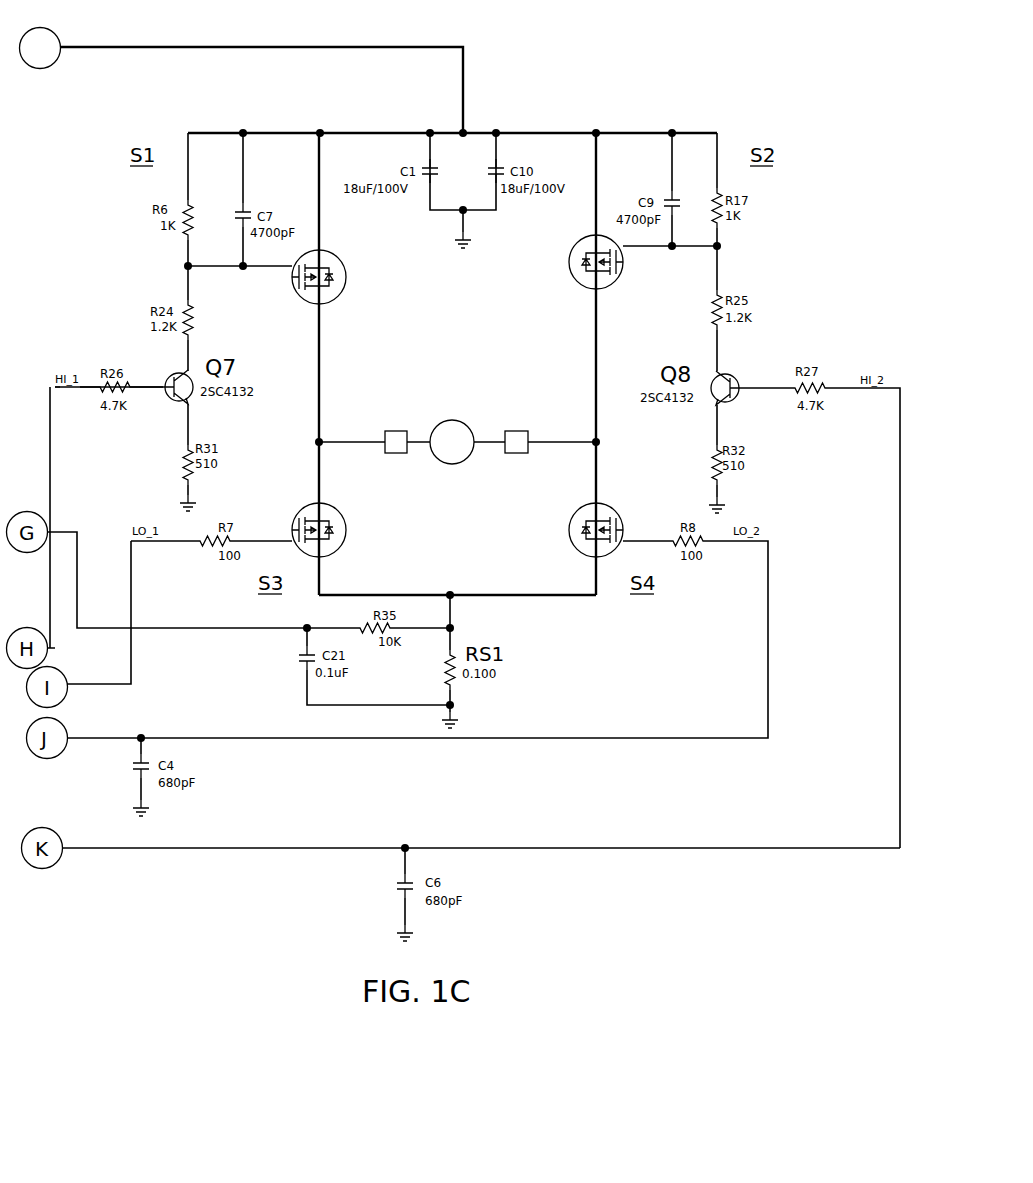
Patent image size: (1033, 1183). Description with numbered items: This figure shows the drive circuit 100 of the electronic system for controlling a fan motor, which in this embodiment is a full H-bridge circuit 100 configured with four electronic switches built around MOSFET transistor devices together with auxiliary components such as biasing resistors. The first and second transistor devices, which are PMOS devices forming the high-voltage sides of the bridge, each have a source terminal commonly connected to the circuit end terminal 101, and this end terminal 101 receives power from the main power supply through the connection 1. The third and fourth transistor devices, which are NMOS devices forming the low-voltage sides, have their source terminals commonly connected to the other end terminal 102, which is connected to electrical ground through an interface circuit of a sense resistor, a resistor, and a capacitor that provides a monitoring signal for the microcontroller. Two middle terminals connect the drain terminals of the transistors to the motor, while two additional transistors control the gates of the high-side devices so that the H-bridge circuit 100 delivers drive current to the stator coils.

The connection 1 is at (278, 51).
The drive circuit 100 is at (454, 364).
The circuit end terminal 101 is at (452, 120).
The circuit end terminal 102 is at (457, 608).